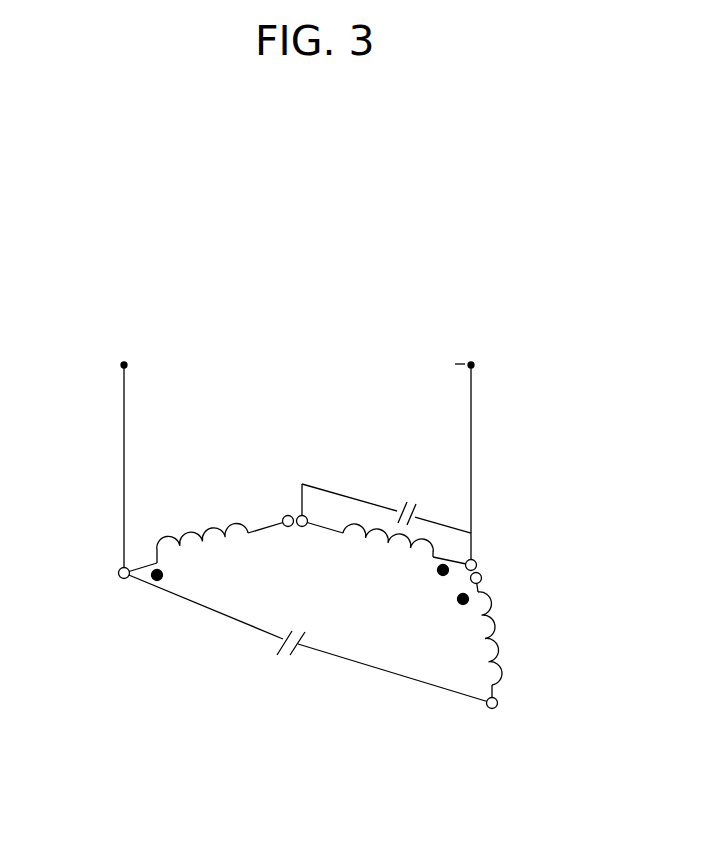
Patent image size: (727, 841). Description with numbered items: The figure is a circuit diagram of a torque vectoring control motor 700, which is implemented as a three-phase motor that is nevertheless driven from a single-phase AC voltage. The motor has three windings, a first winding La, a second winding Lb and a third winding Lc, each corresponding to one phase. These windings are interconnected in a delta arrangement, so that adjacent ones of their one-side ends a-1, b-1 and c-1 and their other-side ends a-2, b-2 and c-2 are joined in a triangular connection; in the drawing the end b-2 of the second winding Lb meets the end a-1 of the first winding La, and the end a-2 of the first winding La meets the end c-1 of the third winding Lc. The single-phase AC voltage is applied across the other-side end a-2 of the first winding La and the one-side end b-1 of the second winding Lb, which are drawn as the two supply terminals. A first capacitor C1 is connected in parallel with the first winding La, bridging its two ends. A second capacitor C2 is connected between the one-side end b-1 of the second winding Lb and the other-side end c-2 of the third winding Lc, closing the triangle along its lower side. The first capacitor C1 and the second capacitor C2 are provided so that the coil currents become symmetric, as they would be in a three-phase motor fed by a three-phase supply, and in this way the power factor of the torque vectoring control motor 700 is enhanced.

The torque vectoring control motor 700 is at (527, 329).
The first winding La is at (386, 547).
The second winding Lb is at (206, 552).
The third winding Lc is at (478, 640).
The first capacitor C1 is at (408, 504).
The second capacitor C2 is at (281, 654).
The one-side end of the first winding a-1 is at (297, 515).
The other-side end of the first winding a-2 is at (477, 561).
The one-side end of the second winding b-1 is at (118, 574).
The other-side end of the second winding b-2 is at (287, 527).
The one-side end of the third winding c-1 is at (482, 578).
The other-side end of the third winding c-2 is at (498, 703).